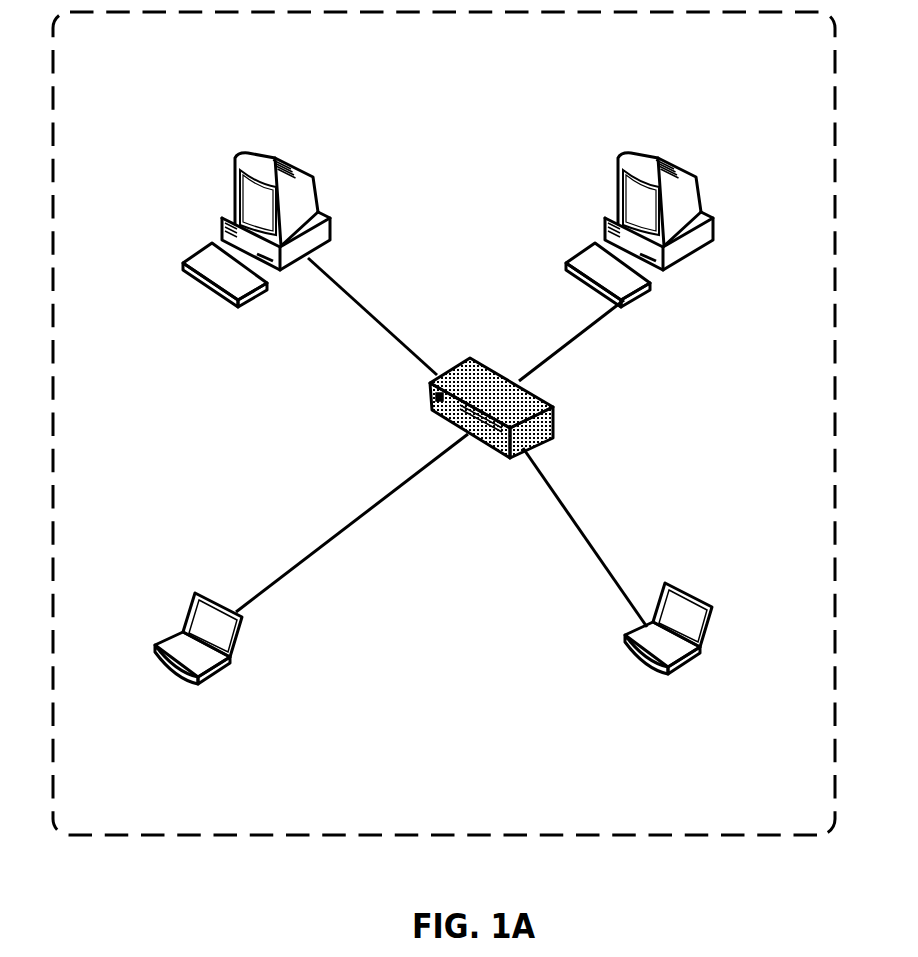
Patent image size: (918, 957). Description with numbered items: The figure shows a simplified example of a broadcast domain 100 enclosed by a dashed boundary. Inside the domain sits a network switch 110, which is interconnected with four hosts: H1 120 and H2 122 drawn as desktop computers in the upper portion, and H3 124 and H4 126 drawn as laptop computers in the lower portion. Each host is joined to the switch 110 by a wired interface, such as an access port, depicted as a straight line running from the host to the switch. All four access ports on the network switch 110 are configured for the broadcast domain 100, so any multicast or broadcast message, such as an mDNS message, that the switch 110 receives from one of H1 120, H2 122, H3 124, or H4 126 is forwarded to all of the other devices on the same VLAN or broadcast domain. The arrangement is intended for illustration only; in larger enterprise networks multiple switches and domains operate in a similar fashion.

The broadcast domain 100 is at (210, 84).
The network switch 110 is at (382, 483).
The H1 120 is at (400, 199).
The H2 122 is at (772, 194).
The H3 124 is at (162, 741).
The H4 126 is at (712, 744).